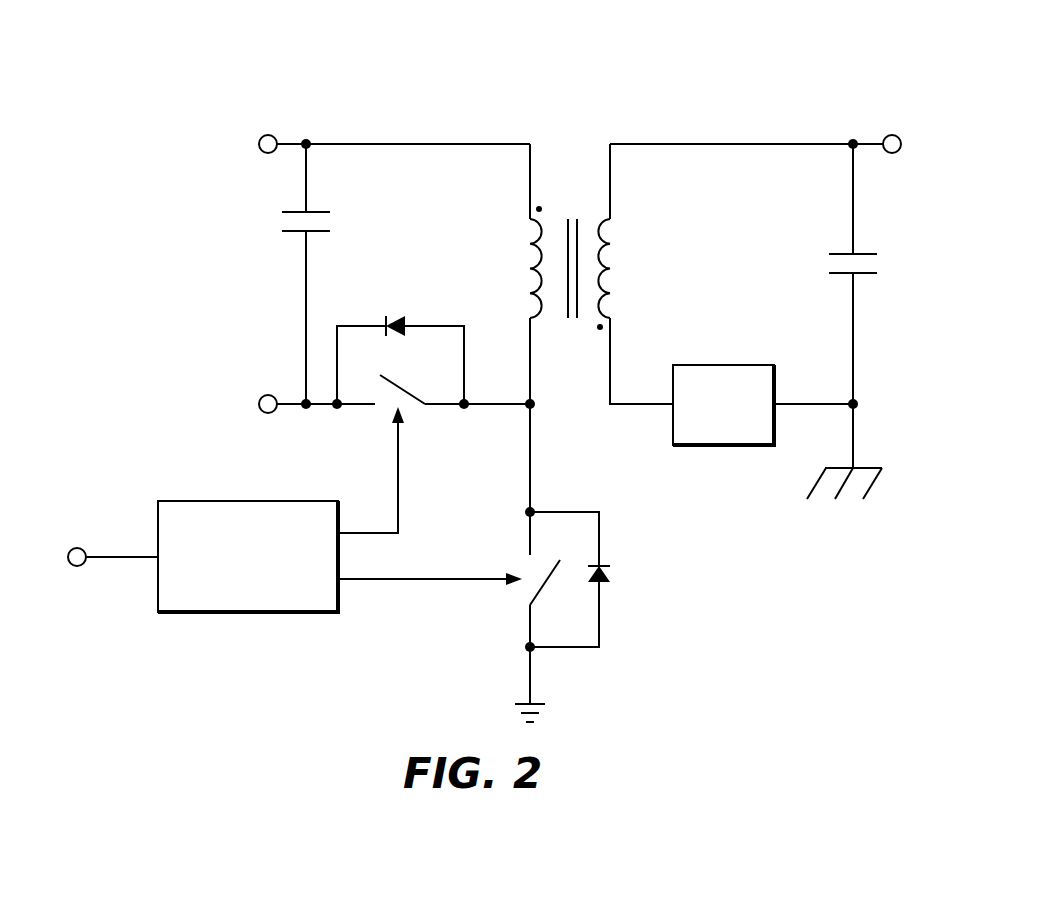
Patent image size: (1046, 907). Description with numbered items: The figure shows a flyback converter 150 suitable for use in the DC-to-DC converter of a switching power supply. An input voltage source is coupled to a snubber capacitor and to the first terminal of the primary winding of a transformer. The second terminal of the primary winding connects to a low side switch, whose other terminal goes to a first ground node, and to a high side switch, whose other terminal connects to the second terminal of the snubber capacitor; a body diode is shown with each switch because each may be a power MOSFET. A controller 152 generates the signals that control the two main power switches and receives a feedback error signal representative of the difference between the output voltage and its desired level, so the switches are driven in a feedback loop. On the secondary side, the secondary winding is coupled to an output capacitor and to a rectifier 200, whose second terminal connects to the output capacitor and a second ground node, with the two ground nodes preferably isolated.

The flyback converter 150 is at (223, 92).
The controller 152 is at (266, 586).
The rectifier 200 is at (743, 419).